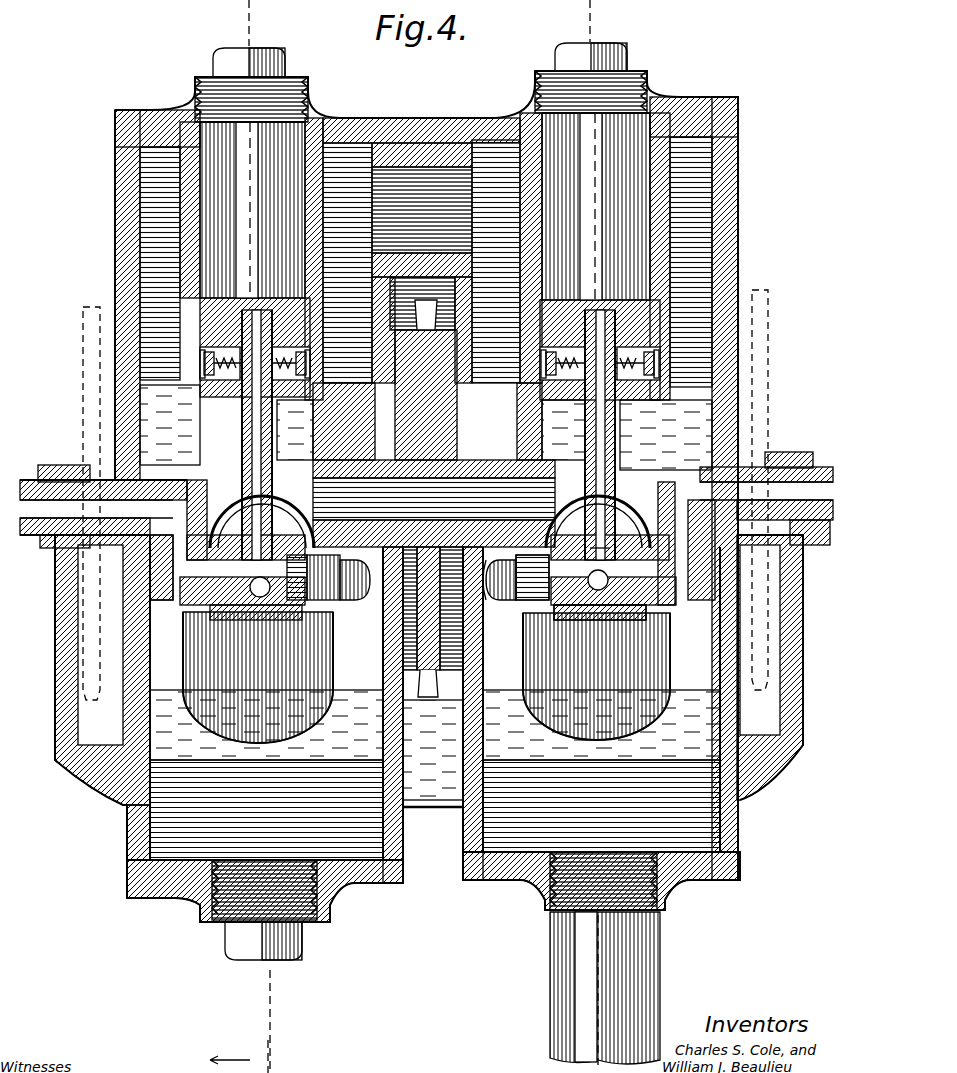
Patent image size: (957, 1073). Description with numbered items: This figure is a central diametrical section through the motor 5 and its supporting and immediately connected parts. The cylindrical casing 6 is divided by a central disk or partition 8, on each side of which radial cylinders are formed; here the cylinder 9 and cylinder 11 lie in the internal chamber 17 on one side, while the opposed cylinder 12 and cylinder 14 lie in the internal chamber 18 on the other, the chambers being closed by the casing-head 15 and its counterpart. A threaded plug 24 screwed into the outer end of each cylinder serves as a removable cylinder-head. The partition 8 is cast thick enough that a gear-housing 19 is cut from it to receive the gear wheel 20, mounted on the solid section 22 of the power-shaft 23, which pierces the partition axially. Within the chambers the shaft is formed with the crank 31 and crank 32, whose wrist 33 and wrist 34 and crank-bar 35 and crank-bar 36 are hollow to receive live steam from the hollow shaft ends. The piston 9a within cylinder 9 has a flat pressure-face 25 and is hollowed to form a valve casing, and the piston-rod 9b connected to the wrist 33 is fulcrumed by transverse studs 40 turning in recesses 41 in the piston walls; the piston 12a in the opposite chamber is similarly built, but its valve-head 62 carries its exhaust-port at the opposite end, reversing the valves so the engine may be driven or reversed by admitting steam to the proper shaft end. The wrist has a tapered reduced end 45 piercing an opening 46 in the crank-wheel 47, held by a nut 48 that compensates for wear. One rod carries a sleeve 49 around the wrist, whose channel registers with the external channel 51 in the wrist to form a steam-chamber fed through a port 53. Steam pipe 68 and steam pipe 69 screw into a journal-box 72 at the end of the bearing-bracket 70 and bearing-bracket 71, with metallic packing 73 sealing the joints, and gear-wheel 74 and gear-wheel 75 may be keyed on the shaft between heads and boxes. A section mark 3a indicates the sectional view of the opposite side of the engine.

The section line 3a is at (257, 1056).
The motor 5 is at (412, 125).
The casing 6 is at (690, 100).
The partition 8 is at (484, 745).
The cylinder 9 is at (596, 206).
The piston 9a is at (636, 392).
The piston-rod 9b is at (614, 443).
The cylinder 11 is at (596, 676).
The cylinder 12 is at (252, 210).
The piston 12a is at (215, 395).
The cylinder 14 is at (258, 677).
The casing-head 15 is at (738, 360).
The internal chamber 17 is at (596, 740).
The internal chamber 18 is at (262, 745).
The gear-housing 19 is at (438, 800).
The gear wheel 20 is at (432, 700).
The solid section of power-shaft 22 is at (434, 499).
The power-shaft 23 is at (205, 480).
The threaded plug 24 is at (230, 54).
The pressure-face 25 is at (590, 300).
The crank 31 is at (690, 600).
The crank 32 is at (152, 605).
The wrist 33 is at (525, 620).
The wrist 34 is at (330, 612).
The crank-bar 35 is at (645, 520).
The crank-bar 36 is at (212, 512).
The transverse stud 40 is at (204, 360).
The recess 41 is at (200, 372).
The reduced end 45 is at (525, 600).
The opening 46 is at (515, 560).
The crank-wheel 47 is at (540, 455).
The nut 48 is at (510, 585).
The sleeve 49 is at (610, 618).
The external channel 51 is at (610, 540).
The port 53 is at (608, 580).
The valve-head 62 is at (280, 280).
The steam-pipe 68 is at (825, 530).
The steam-pipe 69 is at (45, 548).
The bearing-bracket 70 is at (790, 670).
The bearing-bracket 71 is at (60, 680).
The journal-box 72 is at (60, 466).
The metallic packing 73 is at (426, 501).
The gear-wheel 74 is at (768, 389).
The gear-wheel 75 is at (90, 612).